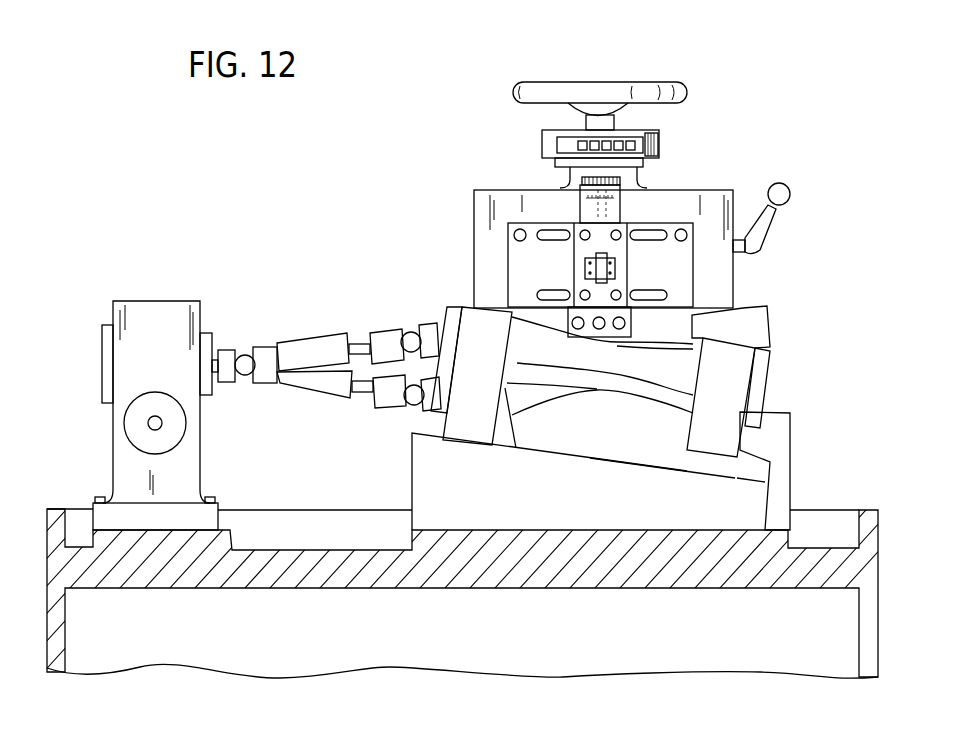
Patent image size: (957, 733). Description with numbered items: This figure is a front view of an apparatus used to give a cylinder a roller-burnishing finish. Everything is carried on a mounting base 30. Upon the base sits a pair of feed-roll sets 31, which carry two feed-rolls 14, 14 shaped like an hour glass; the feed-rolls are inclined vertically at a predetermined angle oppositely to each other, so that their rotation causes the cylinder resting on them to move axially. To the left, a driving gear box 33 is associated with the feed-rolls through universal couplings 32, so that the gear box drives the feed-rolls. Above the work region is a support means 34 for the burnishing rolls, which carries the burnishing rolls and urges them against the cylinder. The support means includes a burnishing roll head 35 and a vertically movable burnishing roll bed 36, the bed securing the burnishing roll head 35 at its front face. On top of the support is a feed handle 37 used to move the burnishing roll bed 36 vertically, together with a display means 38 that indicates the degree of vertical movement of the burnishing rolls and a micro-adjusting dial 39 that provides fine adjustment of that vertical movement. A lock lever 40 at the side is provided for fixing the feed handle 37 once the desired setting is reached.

The feed-rolls 14 is at (663, 338).
The mounting base 30 is at (877, 573).
The pair of feed-roll sets 31 is at (740, 450).
The universal couplings 32 is at (382, 333).
The driving gear box 33 is at (160, 300).
The support means 34 is at (474, 216).
The burnishing roll head 35 is at (627, 260).
The burnishing roll bed 36 is at (523, 268).
The feed handle 37 is at (663, 85).
The display means 38 is at (633, 132).
The micro-adjusting dial 39 is at (585, 195).
The lock lever 40 is at (765, 236).